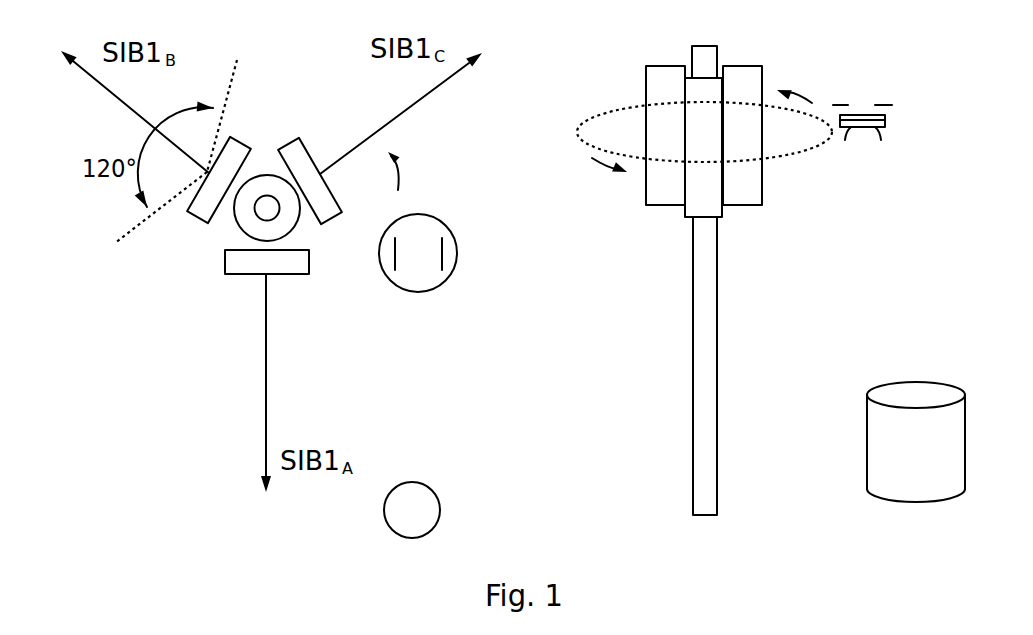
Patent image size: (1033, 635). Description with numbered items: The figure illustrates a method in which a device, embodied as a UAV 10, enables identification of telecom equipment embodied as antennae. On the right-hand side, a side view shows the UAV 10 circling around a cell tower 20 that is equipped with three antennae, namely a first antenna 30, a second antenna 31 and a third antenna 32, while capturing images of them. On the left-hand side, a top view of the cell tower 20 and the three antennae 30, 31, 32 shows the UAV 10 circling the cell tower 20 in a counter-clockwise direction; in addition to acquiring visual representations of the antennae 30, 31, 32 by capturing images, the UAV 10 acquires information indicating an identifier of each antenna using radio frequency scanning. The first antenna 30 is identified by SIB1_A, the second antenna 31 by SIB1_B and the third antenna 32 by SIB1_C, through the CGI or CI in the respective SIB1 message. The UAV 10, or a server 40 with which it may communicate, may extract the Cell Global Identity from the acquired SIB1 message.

The UAV 10 is at (442, 220).
The cell tower 20 is at (185, 290).
The first antenna 30 is at (293, 275).
The second antenna 31 is at (238, 135).
The third antenna 32 is at (330, 223).
The server 40 is at (422, 495).